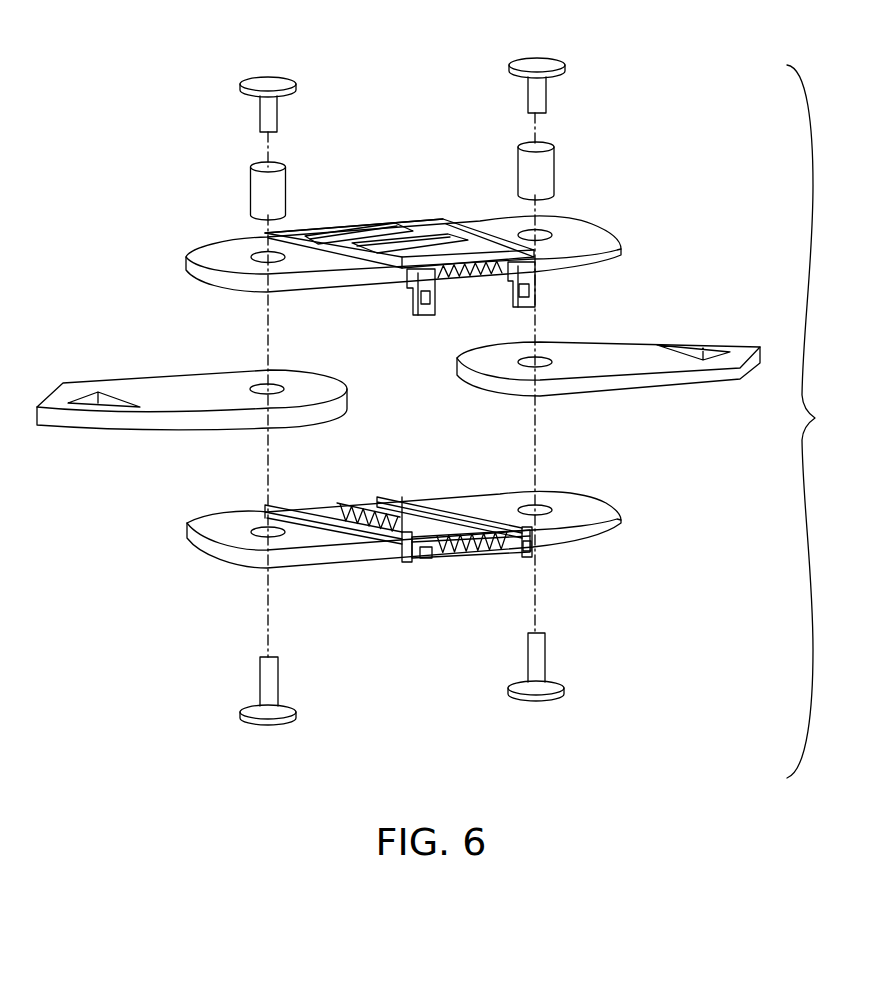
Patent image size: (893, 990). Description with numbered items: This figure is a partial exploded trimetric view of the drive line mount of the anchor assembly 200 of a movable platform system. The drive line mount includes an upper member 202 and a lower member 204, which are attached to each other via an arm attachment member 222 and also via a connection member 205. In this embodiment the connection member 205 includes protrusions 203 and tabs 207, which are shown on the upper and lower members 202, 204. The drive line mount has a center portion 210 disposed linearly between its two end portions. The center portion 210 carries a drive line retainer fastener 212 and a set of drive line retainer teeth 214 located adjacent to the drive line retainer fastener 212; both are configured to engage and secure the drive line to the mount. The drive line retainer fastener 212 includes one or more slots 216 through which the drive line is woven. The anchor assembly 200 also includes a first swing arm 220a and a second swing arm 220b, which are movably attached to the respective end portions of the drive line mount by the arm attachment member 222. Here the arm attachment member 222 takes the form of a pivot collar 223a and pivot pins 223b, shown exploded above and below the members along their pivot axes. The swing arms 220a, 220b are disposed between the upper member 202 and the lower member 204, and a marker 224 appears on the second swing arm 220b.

The anchor assembly 200 is at (625, 62).
The upper member 202 is at (592, 238).
The protrusions 203 is at (432, 558).
The lower member 204 is at (187, 546).
The connection member 205 is at (542, 288).
The tabs 207 is at (420, 314).
The center portion 210 is at (436, 256).
The drive line retainer fastener 212 is at (325, 230).
The drive line retainer teeth 214 is at (489, 285).
The slots 216 is at (438, 236).
The first swing arm 220a is at (158, 387).
The second swing arm 220b is at (617, 383).
The arm attachment member 222 is at (222, 145).
The pivot collar 223a is at (262, 196).
The pivot pins 223b is at (260, 80).
The arrow indicator 224 is at (699, 346).